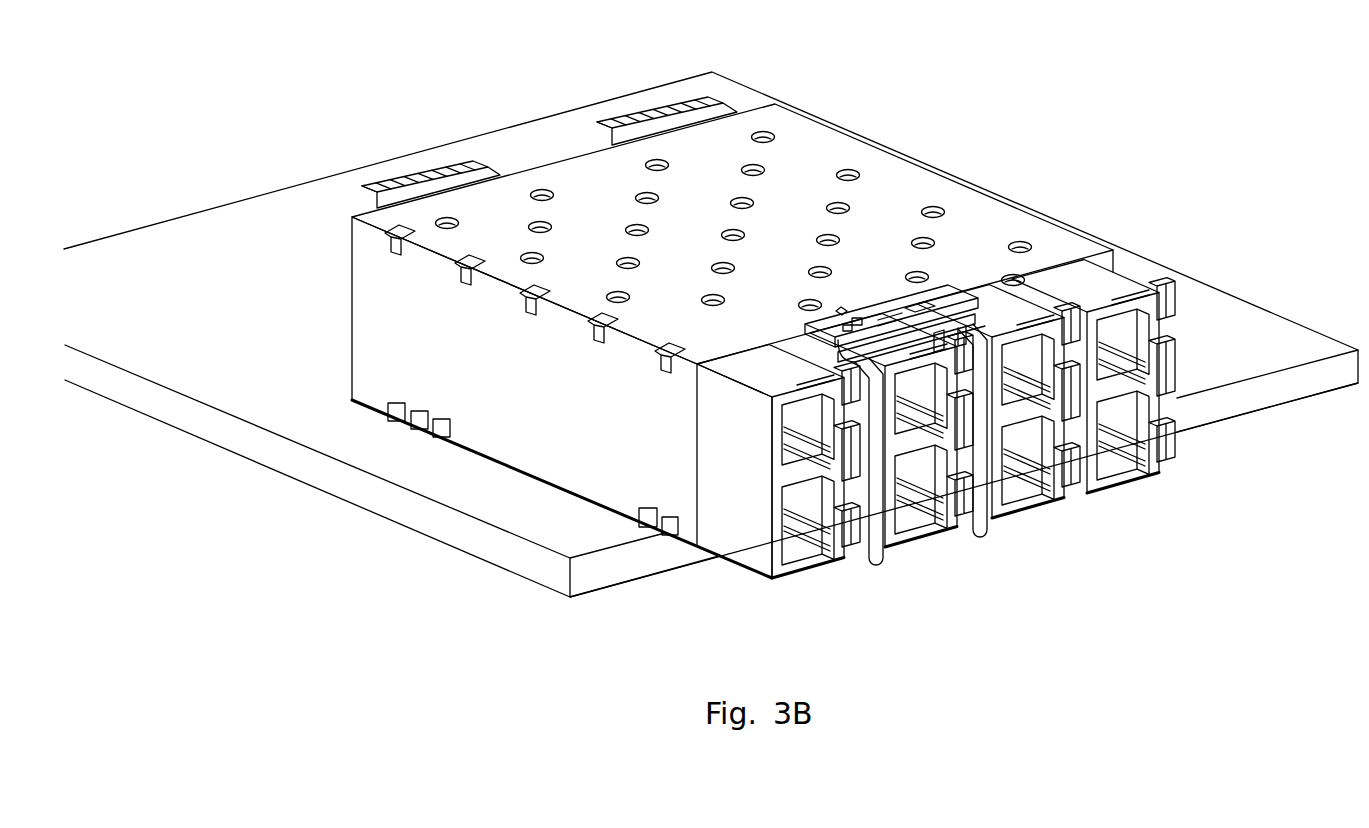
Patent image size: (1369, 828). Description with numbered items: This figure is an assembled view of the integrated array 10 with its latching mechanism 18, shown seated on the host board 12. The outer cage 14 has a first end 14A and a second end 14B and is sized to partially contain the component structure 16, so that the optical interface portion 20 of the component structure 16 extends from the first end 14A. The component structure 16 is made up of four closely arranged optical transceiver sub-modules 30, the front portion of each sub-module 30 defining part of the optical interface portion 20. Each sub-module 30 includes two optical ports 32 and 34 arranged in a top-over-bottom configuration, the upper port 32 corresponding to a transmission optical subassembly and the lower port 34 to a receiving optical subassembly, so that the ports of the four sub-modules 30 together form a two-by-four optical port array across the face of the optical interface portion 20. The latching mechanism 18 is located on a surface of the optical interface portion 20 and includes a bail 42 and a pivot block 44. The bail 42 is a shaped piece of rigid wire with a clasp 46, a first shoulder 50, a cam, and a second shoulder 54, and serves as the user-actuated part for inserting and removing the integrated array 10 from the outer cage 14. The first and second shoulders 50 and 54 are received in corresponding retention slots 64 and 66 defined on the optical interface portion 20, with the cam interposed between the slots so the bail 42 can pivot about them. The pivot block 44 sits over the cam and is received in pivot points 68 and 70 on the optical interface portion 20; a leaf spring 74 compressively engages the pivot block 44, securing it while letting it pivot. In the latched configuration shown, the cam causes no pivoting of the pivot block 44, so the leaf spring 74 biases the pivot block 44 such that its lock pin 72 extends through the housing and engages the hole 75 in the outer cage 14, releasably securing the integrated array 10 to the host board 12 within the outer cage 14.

The integrated array 10 is at (1200, 277).
The host board 12 is at (272, 215).
The outer cage 14 is at (553, 185).
The first end 14A is at (695, 470).
The second end 14B is at (352, 328).
The component structure 16 is at (736, 519).
The latching mechanism 18 is at (868, 304).
The optical interface portion 20 is at (745, 372).
The optical transceiver sub-module 30 is at (808, 483).
The optical port 32 is at (807, 543).
The optical port 34 is at (803, 460).
The bail 42 is at (944, 418).
The pivot block 44 is at (938, 343).
The clasp 46 is at (901, 580).
The first shoulder 50 is at (858, 303).
The second shoulder 54 is at (980, 367).
The retention slot 64 is at (860, 365).
The retention slot 66 is at (963, 338).
The pivot point 68 is at (847, 327).
The pivot point 70 is at (920, 305).
The lock pin 72 is at (857, 322).
The leaf spring 74 is at (890, 312).
The hole 75 is at (838, 311).